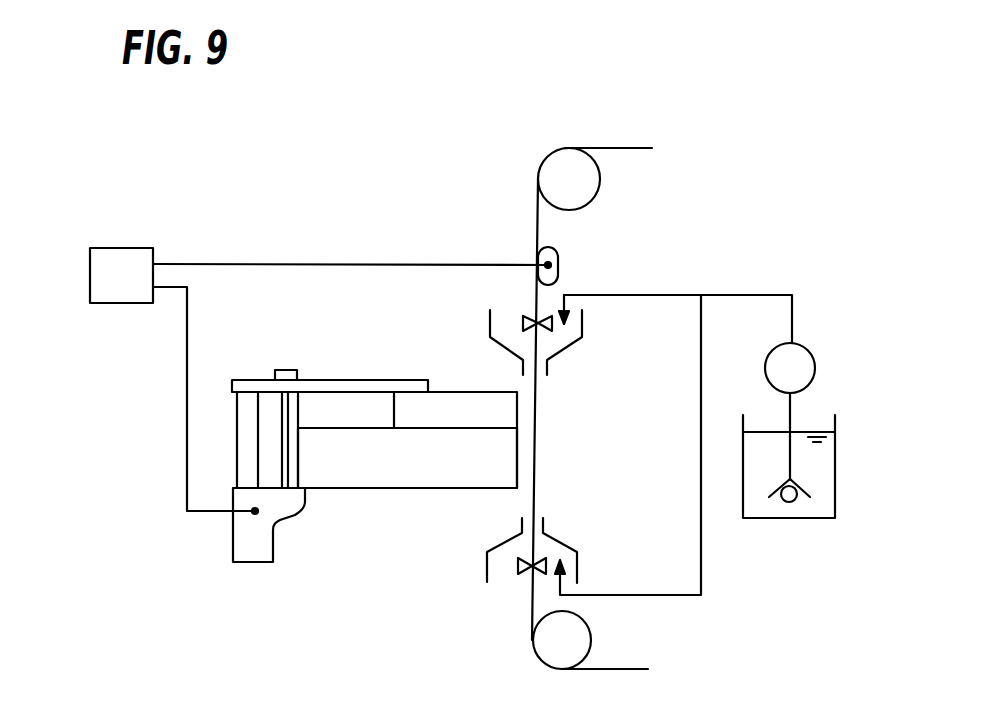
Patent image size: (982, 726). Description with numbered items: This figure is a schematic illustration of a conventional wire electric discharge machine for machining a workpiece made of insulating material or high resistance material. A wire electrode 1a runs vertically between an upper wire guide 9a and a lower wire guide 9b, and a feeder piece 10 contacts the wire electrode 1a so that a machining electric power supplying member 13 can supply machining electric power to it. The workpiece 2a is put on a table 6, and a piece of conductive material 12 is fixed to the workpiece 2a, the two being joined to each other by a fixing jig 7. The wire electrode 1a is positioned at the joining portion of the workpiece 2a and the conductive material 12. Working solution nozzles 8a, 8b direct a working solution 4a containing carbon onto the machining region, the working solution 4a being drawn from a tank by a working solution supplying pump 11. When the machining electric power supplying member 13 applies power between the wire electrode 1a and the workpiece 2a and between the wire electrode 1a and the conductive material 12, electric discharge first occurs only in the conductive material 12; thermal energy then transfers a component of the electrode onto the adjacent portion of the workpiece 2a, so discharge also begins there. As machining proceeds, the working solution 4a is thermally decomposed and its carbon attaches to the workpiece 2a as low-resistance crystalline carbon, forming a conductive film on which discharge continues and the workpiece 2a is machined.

The wire electrode 1a is at (538, 218).
The feeder piece 10 is at (560, 264).
The machining electric power supplying member 13 is at (90, 276).
The fixing jig 7 is at (348, 380).
The conductive material 12 is at (518, 413).
The workpiece 2a is at (406, 488).
The table 6 is at (233, 546).
The wire guide 9a is at (537, 320).
The working solution nozzle 8a is at (585, 323).
The working solution nozzle 8b is at (553, 543).
The wire guide 9b is at (521, 578).
The working solution supplying pump 11 is at (815, 352).
The working solution 4a is at (812, 428).